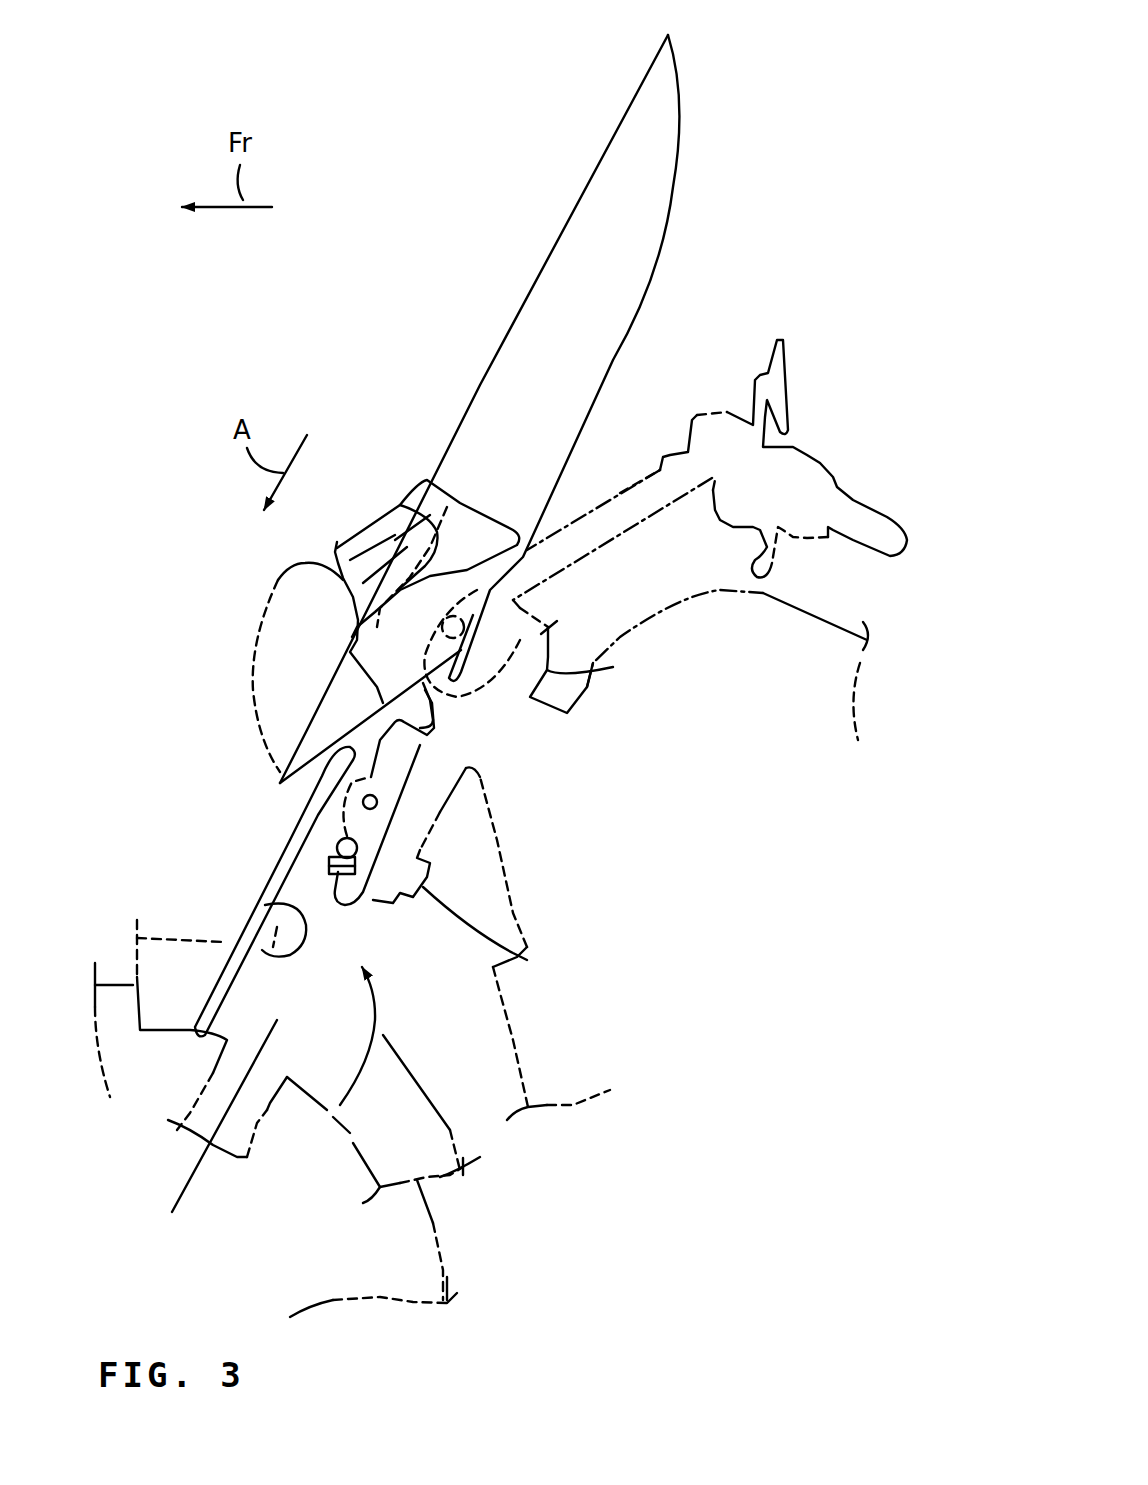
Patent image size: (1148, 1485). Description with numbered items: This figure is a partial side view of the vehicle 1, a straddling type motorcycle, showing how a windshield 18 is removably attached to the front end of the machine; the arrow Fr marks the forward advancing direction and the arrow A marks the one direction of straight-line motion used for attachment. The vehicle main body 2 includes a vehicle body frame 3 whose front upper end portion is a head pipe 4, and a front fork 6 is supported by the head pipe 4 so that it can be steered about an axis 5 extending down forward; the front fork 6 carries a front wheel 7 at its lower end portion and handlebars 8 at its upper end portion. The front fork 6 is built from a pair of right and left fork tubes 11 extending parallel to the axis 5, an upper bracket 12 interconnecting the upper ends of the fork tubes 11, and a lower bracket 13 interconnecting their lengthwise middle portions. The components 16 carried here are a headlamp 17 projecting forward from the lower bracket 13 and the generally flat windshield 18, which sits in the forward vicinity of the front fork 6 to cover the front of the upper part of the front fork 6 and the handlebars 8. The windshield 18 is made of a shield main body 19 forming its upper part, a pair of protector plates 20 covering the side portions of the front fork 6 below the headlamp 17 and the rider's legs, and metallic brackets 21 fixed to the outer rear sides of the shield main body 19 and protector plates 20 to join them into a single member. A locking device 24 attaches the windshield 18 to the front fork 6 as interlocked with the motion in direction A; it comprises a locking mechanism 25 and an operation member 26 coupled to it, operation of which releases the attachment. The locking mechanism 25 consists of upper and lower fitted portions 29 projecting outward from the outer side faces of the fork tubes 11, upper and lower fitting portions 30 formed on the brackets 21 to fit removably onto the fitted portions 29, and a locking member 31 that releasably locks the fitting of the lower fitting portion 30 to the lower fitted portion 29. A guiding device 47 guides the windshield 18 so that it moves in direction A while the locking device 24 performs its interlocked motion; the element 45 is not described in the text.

The vehicle 1 is at (814, 217).
The vehicle main body 2 is at (580, 1132).
The vehicle body frame 3 is at (513, 873).
The head pipe 4 is at (448, 807).
The axis 5 is at (197, 1170).
The front fork 6 is at (338, 1110).
The front wheel 7 is at (447, 1277).
The handlebars 8 is at (872, 507).
The fork tubes 11 is at (267, 1110).
The upper bracket 12 is at (613, 667).
The lower bracket 13 is at (520, 955).
The components 16 is at (479, 409).
The headlamp 17 is at (272, 590).
The windshield 18 is at (538, 275).
The shield main body 19 is at (537, 340).
The protector plates 20 is at (257, 902).
The brackets 21 is at (447, 505).
The locking device 24 is at (370, 889).
The locking mechanism 25 is at (237, 831).
The operation member 26 is at (425, 762).
The fitted portions 29 is at (550, 624).
The fitting portions 30 is at (463, 617).
The locking member 31 is at (328, 880).
The boss portion 45 is at (382, 702).
The guiding device 47 is at (433, 713).